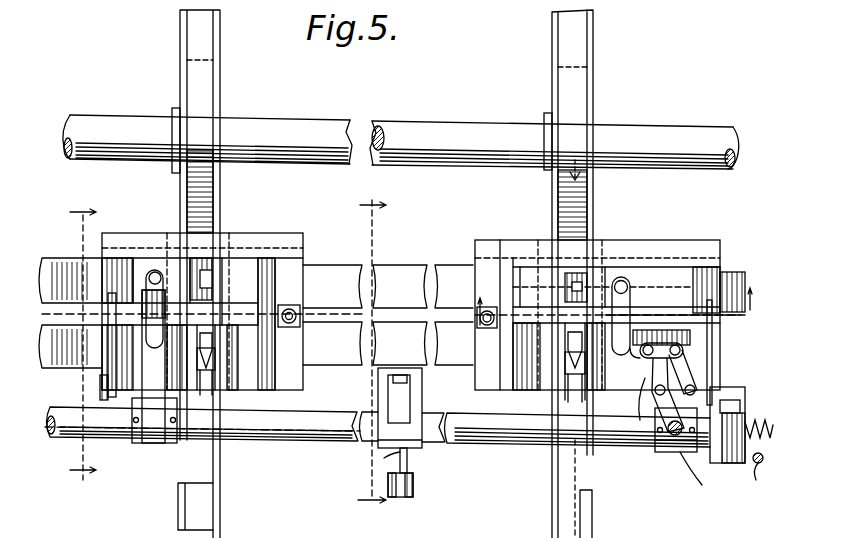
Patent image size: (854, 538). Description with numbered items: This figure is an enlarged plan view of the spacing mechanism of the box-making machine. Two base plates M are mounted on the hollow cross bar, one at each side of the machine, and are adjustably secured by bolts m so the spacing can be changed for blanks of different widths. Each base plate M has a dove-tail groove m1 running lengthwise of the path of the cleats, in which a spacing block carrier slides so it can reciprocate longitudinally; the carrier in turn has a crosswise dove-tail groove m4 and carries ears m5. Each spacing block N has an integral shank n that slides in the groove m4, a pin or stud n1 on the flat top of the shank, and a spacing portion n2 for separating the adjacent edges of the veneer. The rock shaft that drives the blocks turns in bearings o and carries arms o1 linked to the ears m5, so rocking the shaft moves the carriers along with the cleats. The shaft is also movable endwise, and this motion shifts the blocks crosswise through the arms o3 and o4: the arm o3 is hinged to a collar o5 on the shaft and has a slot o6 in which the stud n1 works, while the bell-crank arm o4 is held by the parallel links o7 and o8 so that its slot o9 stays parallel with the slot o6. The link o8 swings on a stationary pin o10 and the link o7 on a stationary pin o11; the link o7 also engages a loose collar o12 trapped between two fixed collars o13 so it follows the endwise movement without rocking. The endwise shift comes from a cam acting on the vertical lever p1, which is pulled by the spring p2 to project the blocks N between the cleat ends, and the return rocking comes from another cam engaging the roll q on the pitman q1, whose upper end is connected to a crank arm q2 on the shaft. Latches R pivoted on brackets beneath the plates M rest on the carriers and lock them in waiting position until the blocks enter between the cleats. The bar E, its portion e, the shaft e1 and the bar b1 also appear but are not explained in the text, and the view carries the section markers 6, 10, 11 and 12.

The vertical rack bar E is at (212, 42).
The rack bar section e is at (205, 60).
The upper shaft e1 is at (500, 135).
The base plate M is at (282, 250).
The bolt m is at (292, 276).
The dove-tail groove m1 is at (207, 360).
The dove-tail groove m4 is at (262, 283).
The ear m5 is at (214, 358).
The spacing block N is at (218, 260).
The shank n is at (157, 270).
The pin or stud n1 is at (150, 278).
The spacing portion n2 is at (198, 280).
The shaft section b1 is at (392, 310).
The latch R is at (116, 375).
The bearing o is at (222, 442).
The arm o1 is at (216, 385).
The arm o3 is at (152, 443).
The bell crank arm o4 is at (640, 305).
The collar o5 is at (122, 443).
The slot o6 is at (152, 340).
The link o7 is at (640, 420).
The link o8 is at (690, 362).
The slot o9 is at (648, 360).
The pin or stud o10 is at (700, 390).
The pin or stud o11 is at (668, 452).
The loose collar o12 is at (698, 483).
The fixed collar o13 is at (658, 452).
The lever p1 is at (742, 405).
The spring p2 is at (759, 420).
The roll q is at (400, 408).
The pitman q1 is at (413, 486).
The crank arm q2 is at (400, 454).
The section line 6- 6 is at (372, 352).
The section line 10 is at (578, 162).
The section line 11 is at (614, 303).
The section line 12- 12 is at (83, 345).